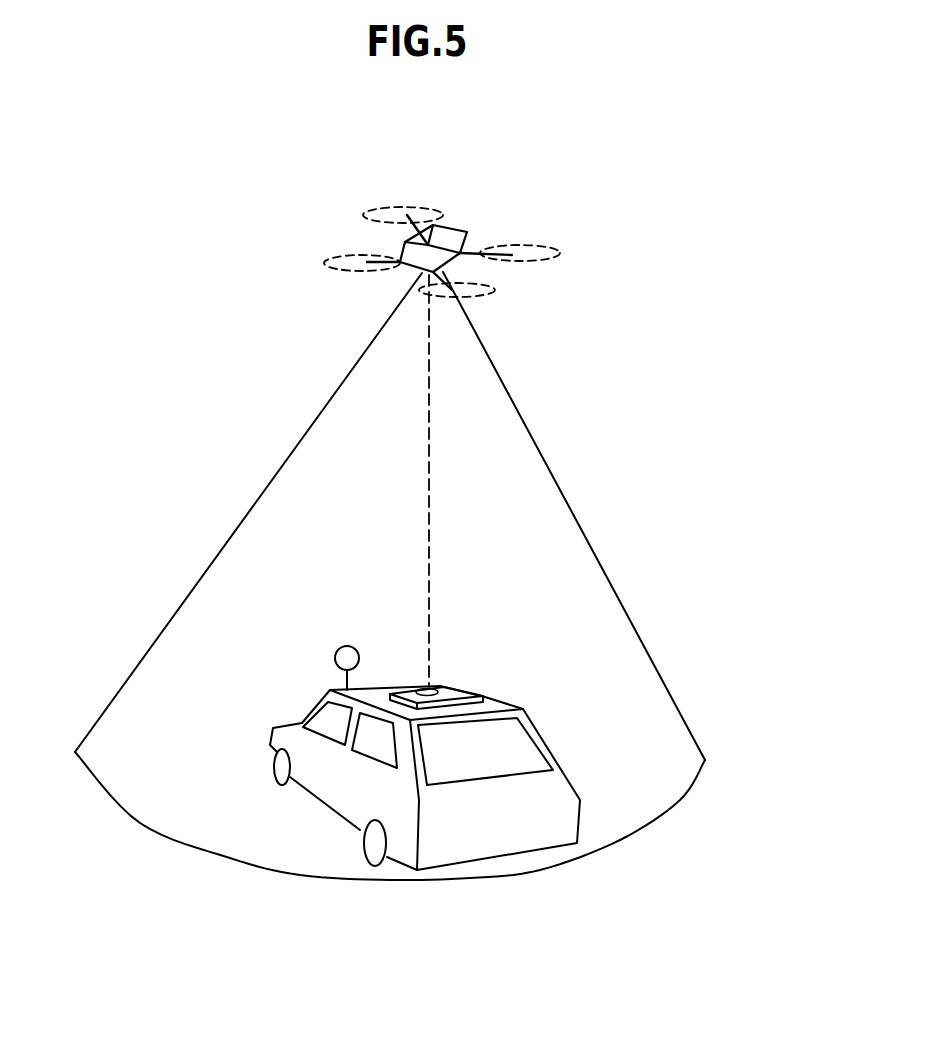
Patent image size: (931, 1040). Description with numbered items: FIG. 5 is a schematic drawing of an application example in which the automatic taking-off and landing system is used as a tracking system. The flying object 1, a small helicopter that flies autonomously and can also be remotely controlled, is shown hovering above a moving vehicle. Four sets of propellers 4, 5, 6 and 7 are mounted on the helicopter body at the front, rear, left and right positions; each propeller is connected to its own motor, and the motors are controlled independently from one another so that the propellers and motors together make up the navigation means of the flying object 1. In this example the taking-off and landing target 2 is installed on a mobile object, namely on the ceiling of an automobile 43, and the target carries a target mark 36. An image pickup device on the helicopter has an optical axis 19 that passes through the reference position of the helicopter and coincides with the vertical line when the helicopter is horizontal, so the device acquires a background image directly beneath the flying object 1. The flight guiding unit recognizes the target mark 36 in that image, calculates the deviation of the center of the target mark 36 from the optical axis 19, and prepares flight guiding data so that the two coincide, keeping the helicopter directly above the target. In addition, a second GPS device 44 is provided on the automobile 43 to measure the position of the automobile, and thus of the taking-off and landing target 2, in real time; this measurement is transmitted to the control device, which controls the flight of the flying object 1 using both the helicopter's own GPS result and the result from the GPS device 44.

The flying object 1 is at (463, 228).
The taking-off and landing target 2 is at (397, 687).
The propeller 4 is at (388, 207).
The propeller 5 is at (547, 247).
The propeller 6 is at (323, 263).
The propeller 7 is at (488, 297).
The optical axis 19 is at (428, 462).
The target mark 36 is at (453, 687).
The automobile 43 is at (568, 782).
The second GPS device 44 is at (337, 650).